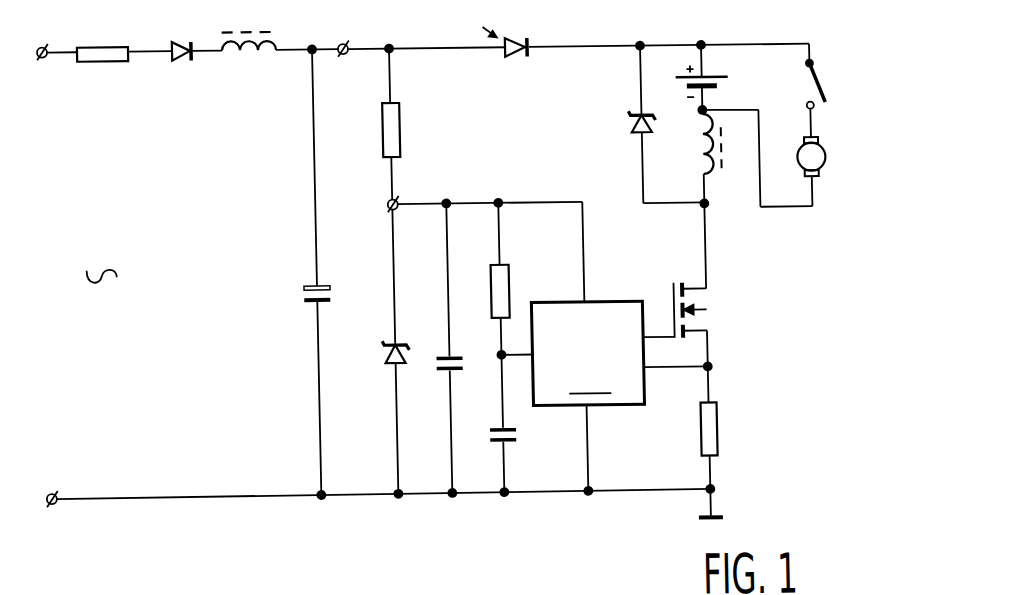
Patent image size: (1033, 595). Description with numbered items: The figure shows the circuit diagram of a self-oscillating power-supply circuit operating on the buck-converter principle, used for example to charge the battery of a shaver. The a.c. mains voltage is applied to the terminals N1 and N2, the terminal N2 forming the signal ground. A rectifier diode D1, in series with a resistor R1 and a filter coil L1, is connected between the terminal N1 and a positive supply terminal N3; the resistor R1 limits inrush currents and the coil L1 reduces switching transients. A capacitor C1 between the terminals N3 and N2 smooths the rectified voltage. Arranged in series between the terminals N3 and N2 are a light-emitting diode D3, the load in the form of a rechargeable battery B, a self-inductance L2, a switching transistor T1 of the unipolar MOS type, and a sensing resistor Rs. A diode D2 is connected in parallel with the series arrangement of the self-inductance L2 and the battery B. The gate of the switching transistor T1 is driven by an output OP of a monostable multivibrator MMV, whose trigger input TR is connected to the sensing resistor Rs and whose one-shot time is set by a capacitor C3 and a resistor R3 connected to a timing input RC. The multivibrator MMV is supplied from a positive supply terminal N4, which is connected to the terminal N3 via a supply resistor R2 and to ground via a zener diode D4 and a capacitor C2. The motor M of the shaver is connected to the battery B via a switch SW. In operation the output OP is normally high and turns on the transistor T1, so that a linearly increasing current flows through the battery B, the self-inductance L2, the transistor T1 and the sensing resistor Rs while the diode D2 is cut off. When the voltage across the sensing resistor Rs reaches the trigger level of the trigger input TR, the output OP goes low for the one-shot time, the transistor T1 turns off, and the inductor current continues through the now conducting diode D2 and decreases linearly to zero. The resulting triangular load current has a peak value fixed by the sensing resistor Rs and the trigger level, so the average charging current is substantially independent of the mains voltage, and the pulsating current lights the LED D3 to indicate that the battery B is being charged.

The terminal N1 is at (43, 33).
The terminal N2 is at (55, 484).
The positive supply terminal N3 is at (347, 29).
The positive supply terminal N4 is at (484, 190).
The resistor R1 is at (102, 35).
The supply resistor R2 is at (405, 124).
The resistor R3 is at (513, 280).
The sensing resistor Rs is at (725, 427).
The rectifier diode D1 is at (179, 34).
The diode D2 is at (652, 127).
The light-emitting diode D3 is at (504, 29).
The zener diode D4 is at (383, 351).
The filter coil L1 is at (249, 26).
The self-inductance L2 is at (725, 156).
The capacitor C1 is at (334, 272).
The capacitor C2 is at (462, 348).
The capacitor C3 is at (516, 423).
The rechargeable battery B is at (701, 80).
The switch SW is at (802, 77).
The motor M is at (764, 158).
The switching transistor T1 is at (706, 285).
The monostable multivibrator MMV is at (587, 346).
The timing input RC is at (530, 357).
The output OP is at (646, 338).
The trigger input TR is at (664, 368).